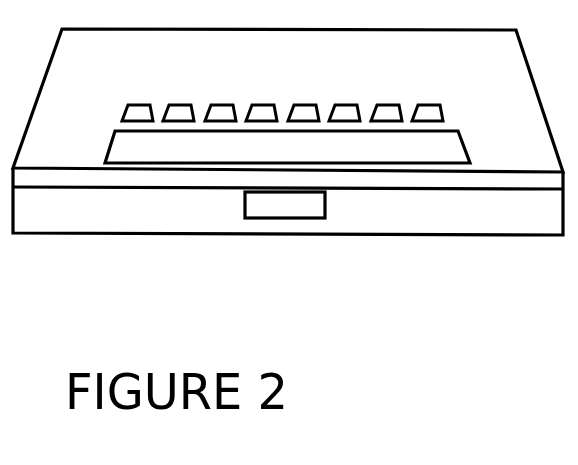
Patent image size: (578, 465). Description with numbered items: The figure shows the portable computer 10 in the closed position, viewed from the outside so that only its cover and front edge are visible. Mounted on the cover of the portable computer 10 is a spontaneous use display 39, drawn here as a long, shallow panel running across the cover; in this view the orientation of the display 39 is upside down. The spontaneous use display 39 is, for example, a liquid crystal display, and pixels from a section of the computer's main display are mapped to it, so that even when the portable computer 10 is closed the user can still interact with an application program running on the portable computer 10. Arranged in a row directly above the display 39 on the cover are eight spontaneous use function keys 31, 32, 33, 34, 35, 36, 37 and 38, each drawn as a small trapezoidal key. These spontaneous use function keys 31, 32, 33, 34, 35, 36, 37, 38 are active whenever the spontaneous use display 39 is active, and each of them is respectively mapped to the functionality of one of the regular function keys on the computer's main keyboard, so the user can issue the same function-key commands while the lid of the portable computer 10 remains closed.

The portable computer 10 is at (127, 235).
The spontaneous use function key 31 is at (445, 105).
The spontaneous use function key 32 is at (396, 103).
The spontaneous use function key 33 is at (352, 103).
The spontaneous use function key 34 is at (304, 103).
The spontaneous use function key 35 is at (261, 103).
The spontaneous use function key 36 is at (218, 103).
The spontaneous use function key 37 is at (176, 103).
The spontaneous use function key 38 is at (136, 103).
The spontaneous use display 39 is at (465, 139).